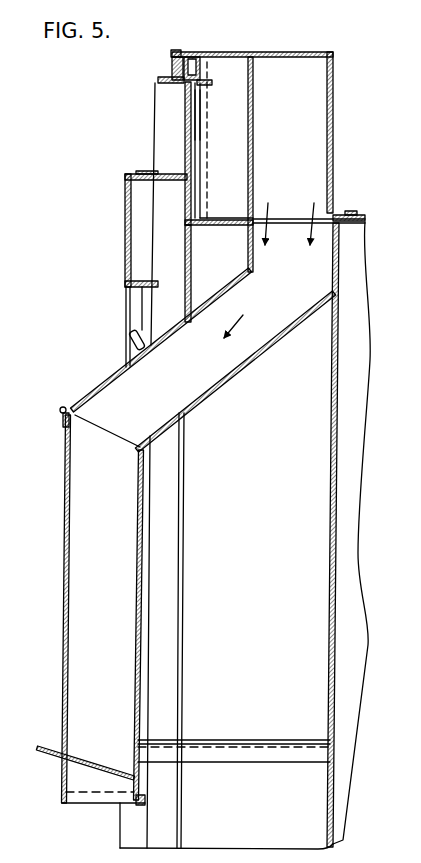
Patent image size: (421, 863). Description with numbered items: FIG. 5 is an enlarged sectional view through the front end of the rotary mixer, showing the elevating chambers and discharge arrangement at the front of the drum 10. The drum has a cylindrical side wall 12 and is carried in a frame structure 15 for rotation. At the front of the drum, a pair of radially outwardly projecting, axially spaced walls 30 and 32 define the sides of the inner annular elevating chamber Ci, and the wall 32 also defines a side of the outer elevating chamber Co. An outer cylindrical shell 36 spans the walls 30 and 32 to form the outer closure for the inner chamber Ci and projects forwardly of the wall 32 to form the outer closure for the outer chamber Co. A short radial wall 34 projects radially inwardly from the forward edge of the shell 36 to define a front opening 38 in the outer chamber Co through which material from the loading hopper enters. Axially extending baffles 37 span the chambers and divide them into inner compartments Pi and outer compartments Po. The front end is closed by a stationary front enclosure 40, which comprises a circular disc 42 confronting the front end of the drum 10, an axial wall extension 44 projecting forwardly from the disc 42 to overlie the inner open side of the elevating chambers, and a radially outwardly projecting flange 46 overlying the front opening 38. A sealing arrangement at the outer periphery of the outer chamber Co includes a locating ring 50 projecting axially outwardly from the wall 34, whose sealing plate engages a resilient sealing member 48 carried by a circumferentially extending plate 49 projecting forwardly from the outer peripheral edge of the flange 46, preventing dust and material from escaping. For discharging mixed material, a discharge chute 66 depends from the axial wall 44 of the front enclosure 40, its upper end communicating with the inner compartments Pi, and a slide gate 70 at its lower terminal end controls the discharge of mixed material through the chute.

The cylindrical drum 10 is at (362, 212).
The cylindrical side wall 12 is at (367, 218).
The frame structure 15 is at (125, 199).
The radially outwardly projecting wall 30 is at (335, 164).
The radially outwardly projecting wall 32 is at (252, 131).
The short radial wall 34 is at (200, 78).
The outer cylindrical shell 36 is at (278, 54).
The baffles 37 is at (208, 88).
The front opening 38 is at (205, 114).
The stationary front enclosure 40 is at (331, 423).
The circular disc 42 is at (331, 515).
The axial wall extension 44 is at (232, 227).
The flange 46 is at (187, 142).
The annular resilient sealing member 48 is at (172, 66).
The circumferentially extending plate 49 is at (165, 83).
The locating ring 50 is at (171, 53).
The discharge chute 66 is at (229, 384).
The slide gate 70 is at (46, 747).
The outer compartments Po is at (208, 75).
The outer elevating chamber Co is at (224, 73).
The inner compartments Pi is at (313, 80).
The inner annular elevating chamber Ci is at (318, 120).